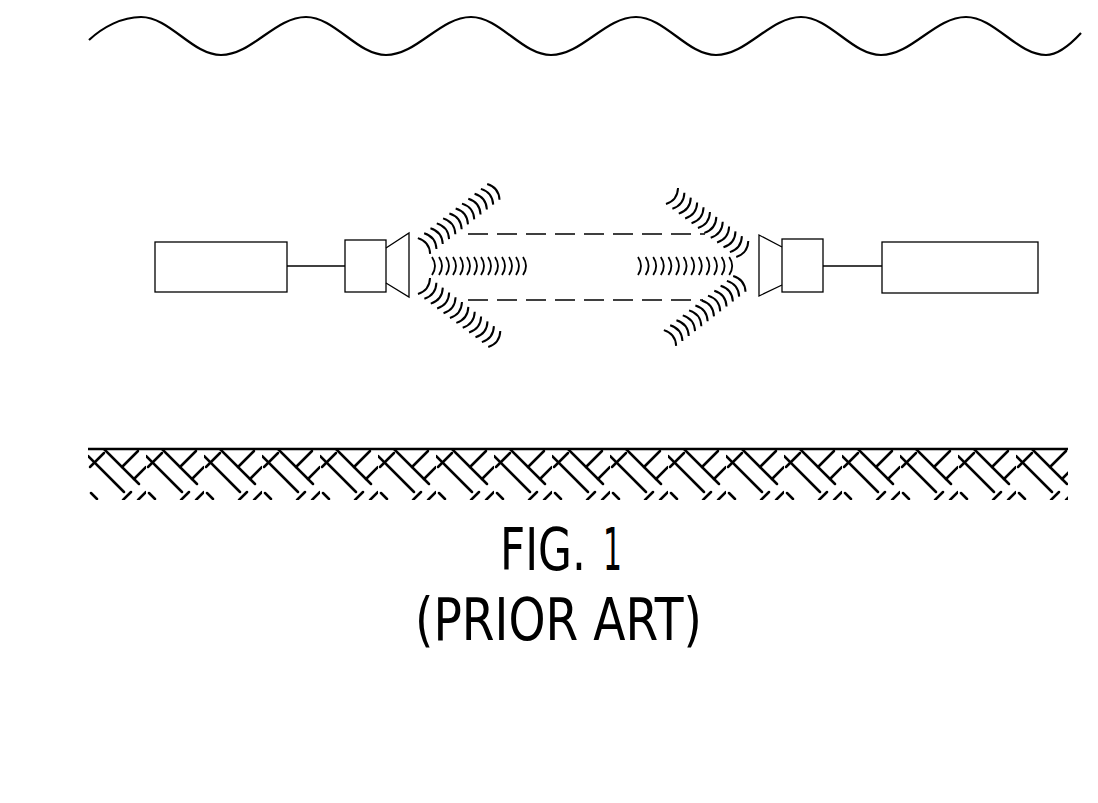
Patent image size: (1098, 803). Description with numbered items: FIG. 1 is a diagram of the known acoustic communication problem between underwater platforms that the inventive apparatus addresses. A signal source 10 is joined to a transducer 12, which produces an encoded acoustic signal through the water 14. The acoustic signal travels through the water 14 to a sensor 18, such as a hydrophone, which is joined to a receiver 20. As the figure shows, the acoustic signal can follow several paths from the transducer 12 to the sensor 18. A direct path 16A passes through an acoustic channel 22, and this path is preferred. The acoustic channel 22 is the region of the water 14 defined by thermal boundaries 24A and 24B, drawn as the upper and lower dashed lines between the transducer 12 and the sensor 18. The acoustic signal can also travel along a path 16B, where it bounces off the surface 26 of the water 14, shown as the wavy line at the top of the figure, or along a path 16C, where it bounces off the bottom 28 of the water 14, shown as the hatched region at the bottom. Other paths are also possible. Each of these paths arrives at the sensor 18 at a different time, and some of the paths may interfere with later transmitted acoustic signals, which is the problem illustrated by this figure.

The signal source 10 is at (221, 242).
The transducer 12 is at (367, 240).
The water 14 is at (662, 100).
The direct path 16A is at (508, 276).
The surface-bounce path 16B is at (477, 198).
The bottom-bounce path 16C is at (462, 323).
The sensor 18 is at (805, 239).
The receiver 20 is at (947, 242).
The acoustic channel 22 is at (618, 252).
The thermal boundary 24A is at (648, 233).
The thermal boundary 24B is at (625, 301).
The surface 26 is at (511, 33).
The bottom 28 is at (618, 449).